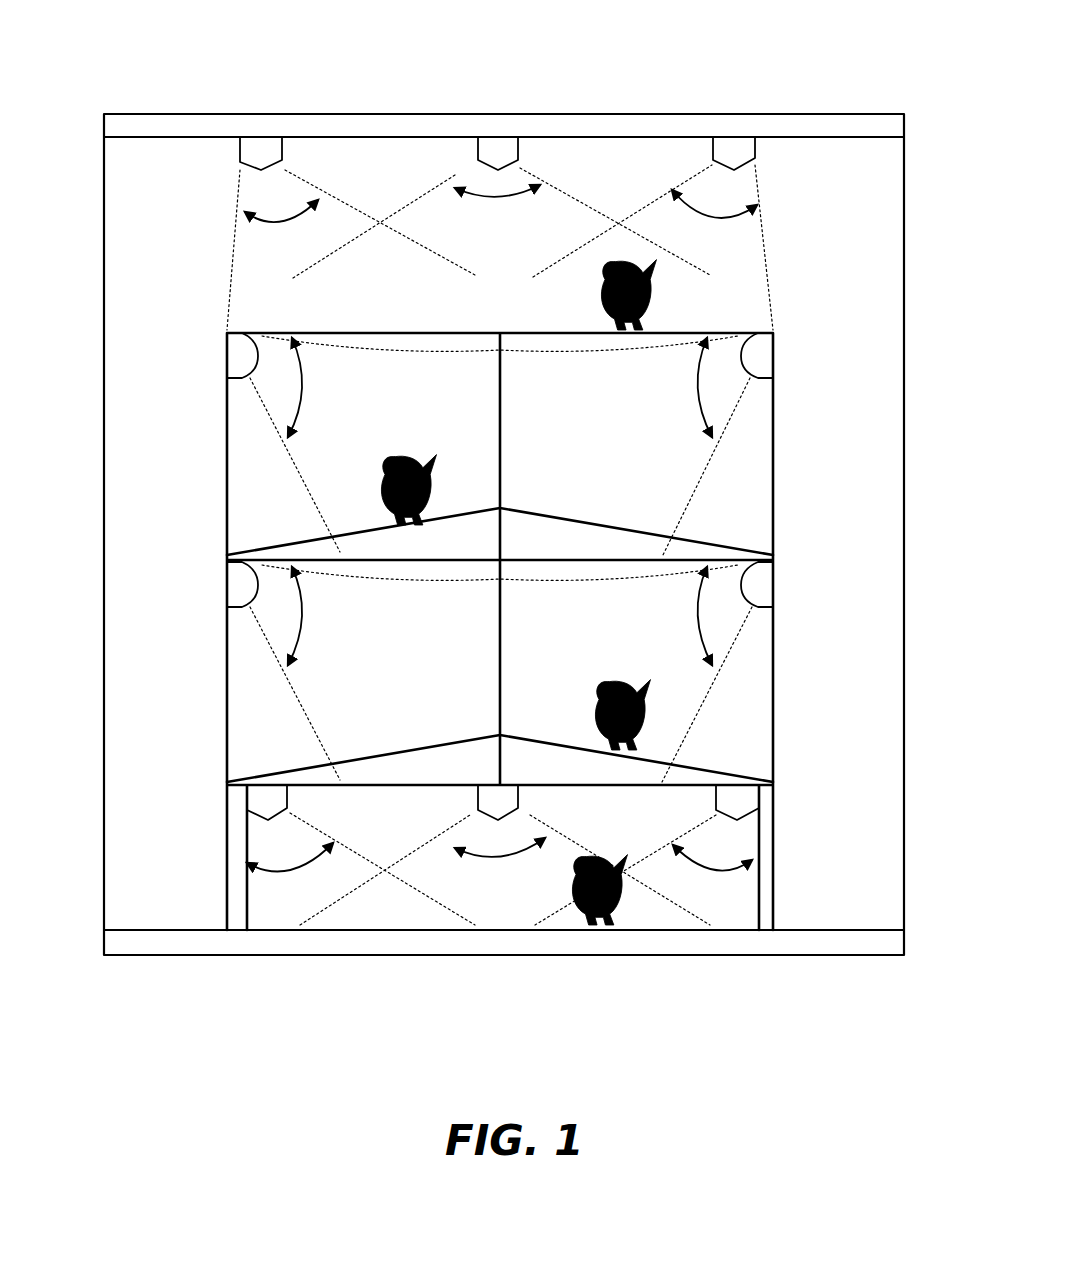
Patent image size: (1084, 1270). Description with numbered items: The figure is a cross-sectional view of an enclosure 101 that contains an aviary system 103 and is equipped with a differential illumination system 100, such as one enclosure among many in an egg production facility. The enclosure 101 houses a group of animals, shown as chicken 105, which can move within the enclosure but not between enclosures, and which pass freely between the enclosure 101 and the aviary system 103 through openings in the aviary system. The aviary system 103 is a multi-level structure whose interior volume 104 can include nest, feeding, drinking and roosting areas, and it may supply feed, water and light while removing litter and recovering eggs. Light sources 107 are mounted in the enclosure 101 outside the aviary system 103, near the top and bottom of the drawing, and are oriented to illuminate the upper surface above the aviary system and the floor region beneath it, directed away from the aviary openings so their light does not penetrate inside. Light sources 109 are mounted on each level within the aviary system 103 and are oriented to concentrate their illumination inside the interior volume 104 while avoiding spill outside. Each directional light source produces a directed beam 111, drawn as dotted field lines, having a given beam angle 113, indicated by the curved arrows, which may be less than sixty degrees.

The differential illumination system 100 is at (600, 37).
The enclosure 101 is at (862, 110).
The aviary system 103 is at (773, 462).
The interior volume 104 is at (737, 513).
The chicken 105 is at (406, 447).
The light source 107 is at (280, 140).
The light source 109 is at (228, 356).
The directed beam 111 is at (765, 244).
The beam angle 113 is at (713, 221).